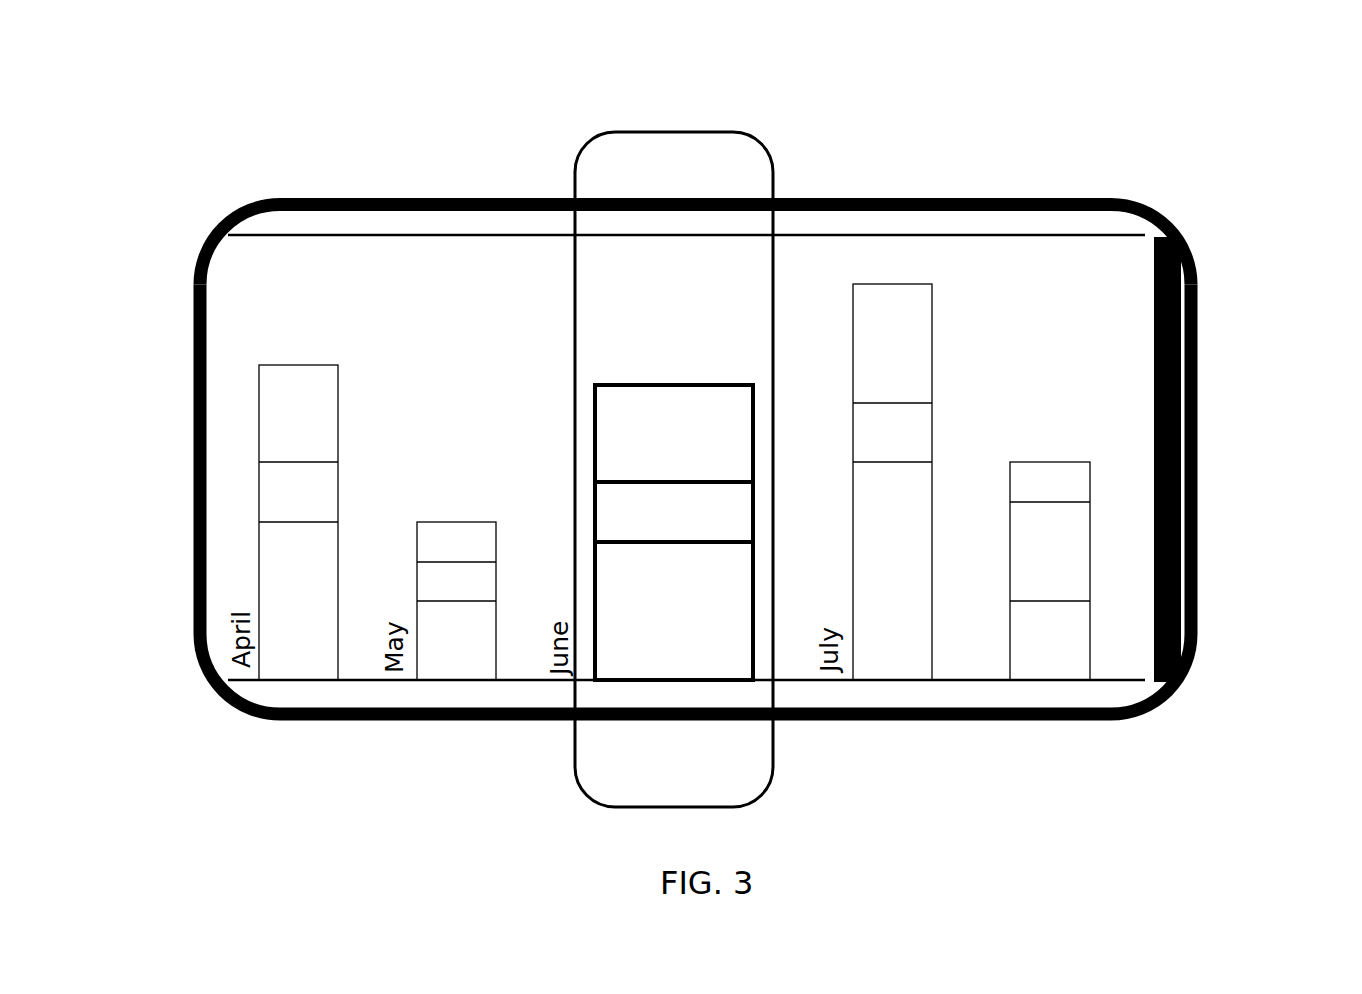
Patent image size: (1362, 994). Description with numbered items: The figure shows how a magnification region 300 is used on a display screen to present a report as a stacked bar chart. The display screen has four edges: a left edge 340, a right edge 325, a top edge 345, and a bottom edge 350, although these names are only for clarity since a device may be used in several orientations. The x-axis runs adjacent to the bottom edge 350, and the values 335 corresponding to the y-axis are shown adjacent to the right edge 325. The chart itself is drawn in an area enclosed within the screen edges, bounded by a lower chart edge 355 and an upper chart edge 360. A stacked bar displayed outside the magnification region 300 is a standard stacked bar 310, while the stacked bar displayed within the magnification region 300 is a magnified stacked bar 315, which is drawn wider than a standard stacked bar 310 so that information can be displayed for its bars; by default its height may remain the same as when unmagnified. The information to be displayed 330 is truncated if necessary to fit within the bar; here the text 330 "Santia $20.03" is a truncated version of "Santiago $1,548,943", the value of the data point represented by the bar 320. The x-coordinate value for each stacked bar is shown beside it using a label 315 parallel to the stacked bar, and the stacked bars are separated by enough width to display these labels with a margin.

The magnification region 300 is at (577, 160).
The standard stacked bar 310 is at (652, 382).
The magnified stacked bar 315 is at (991, 580).
The bar 320 is at (612, 632).
The right edge 325 is at (1197, 512).
The information to be displayed 330 is at (710, 618).
The values corresponding to the y-axis 335 is at (1152, 305).
The left edge 340 is at (193, 430).
The top edge 345 is at (493, 197).
The bottom edge 350 is at (472, 718).
The lower chart edge 355 is at (1048, 682).
The upper chart edge 360 is at (912, 235).